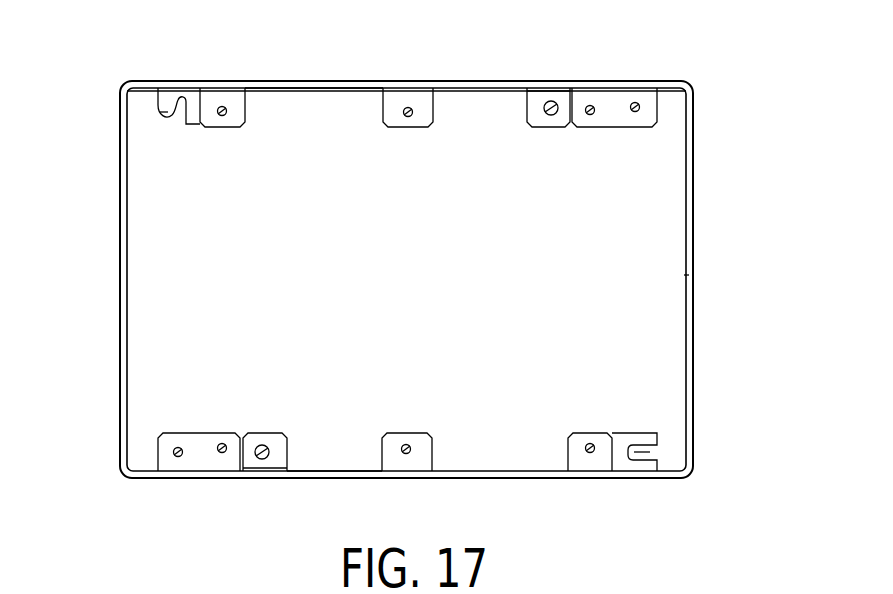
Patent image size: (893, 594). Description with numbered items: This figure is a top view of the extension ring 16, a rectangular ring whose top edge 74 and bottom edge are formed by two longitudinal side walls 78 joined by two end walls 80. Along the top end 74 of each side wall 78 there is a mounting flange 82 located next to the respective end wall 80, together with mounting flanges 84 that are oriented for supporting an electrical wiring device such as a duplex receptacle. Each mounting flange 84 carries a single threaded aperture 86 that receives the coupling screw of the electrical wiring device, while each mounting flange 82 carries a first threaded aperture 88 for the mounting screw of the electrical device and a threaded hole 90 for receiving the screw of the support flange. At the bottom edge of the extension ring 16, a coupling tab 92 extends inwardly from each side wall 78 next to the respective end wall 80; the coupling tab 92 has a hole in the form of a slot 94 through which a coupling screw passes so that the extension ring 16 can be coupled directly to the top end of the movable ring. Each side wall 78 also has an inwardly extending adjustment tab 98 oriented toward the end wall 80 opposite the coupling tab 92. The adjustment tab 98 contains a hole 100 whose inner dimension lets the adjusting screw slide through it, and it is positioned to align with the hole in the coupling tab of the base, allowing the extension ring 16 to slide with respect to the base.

The extension ring 16 is at (702, 287).
The top edge 74 is at (319, 82).
The longitudinal side wall 78 is at (480, 92).
The end wall 80 is at (120, 268).
The mounting flange 82 is at (627, 128).
The mounting flange 84 is at (247, 103).
The threaded aperture 86 is at (216, 108).
The first threaded aperture 88 is at (591, 108).
The threaded hole 90 is at (636, 106).
The coupling tab 92 is at (187, 127).
The slot 94 is at (166, 116).
The adjustment tab 98 is at (550, 128).
The hole 100 is at (549, 110).